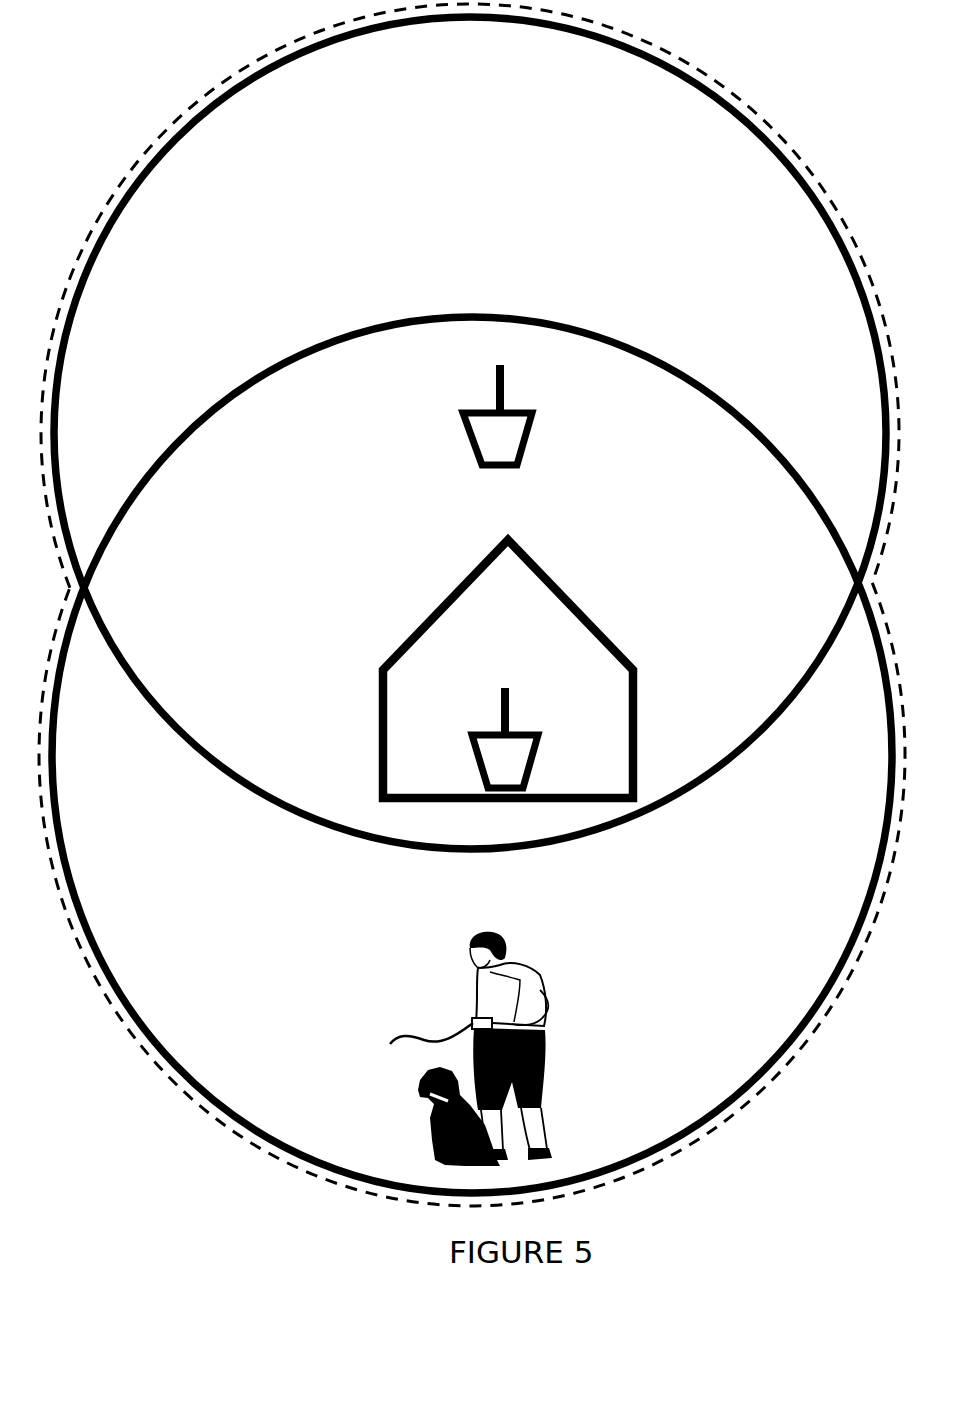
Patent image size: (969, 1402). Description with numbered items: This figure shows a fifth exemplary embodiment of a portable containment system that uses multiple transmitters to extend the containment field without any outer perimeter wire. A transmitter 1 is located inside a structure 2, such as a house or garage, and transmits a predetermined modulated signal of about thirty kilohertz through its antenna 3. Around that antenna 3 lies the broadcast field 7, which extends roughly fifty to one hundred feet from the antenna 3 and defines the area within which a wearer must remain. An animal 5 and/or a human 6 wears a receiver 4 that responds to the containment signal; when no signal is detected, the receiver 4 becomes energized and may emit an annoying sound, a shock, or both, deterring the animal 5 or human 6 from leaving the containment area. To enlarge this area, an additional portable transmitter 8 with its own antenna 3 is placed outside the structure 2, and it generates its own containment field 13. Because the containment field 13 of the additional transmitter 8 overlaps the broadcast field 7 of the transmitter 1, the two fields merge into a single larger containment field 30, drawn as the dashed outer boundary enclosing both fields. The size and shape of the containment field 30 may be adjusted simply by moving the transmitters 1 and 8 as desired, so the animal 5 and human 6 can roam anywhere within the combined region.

The transmitter 1 is at (540, 735).
The structure 2 is at (378, 732).
The antenna 3 is at (500, 718).
The receiver 4 is at (425, 1097).
The animal 5 is at (430, 1118).
The human 6 is at (545, 1125).
The broadcast field 7 is at (405, 320).
The additional portable transmitter 8 is at (535, 410).
The containment field 13 is at (475, 20).
The single larger containment field 30 is at (795, 152).